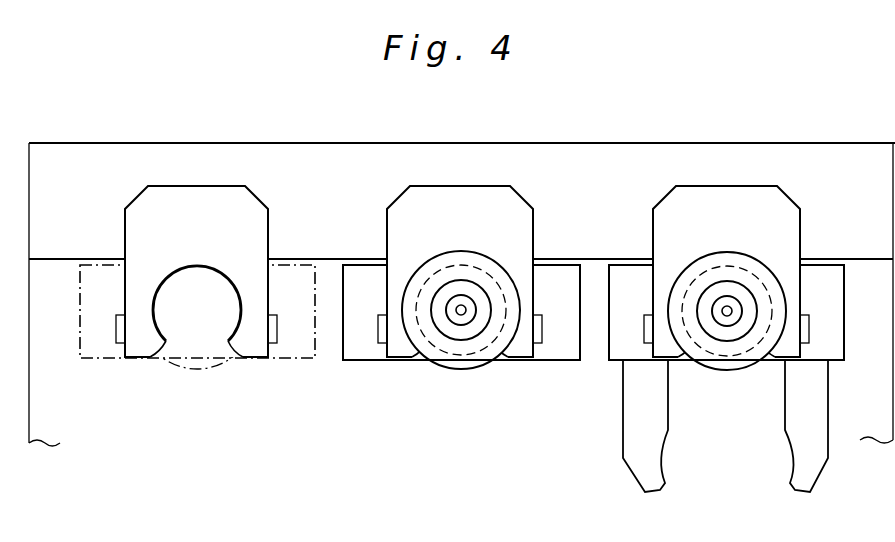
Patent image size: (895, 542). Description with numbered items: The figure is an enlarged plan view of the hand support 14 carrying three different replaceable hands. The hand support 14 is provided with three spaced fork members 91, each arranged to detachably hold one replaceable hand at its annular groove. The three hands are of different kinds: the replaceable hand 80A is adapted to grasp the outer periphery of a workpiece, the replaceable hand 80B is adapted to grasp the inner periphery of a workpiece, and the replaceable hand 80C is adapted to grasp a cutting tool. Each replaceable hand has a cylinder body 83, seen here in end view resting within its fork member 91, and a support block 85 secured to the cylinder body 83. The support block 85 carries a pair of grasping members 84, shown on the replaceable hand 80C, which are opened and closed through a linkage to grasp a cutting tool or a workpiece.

The hand support 14 is at (593, 148).
The replaceable hand 80A is at (135, 360).
The replaceable hand 80B is at (378, 360).
The replaceable hand 80C is at (614, 370).
The cylinder body 83 is at (463, 253).
The grasping members 84 is at (792, 393).
The support block 85 is at (553, 352).
The fork members 91 is at (206, 194).